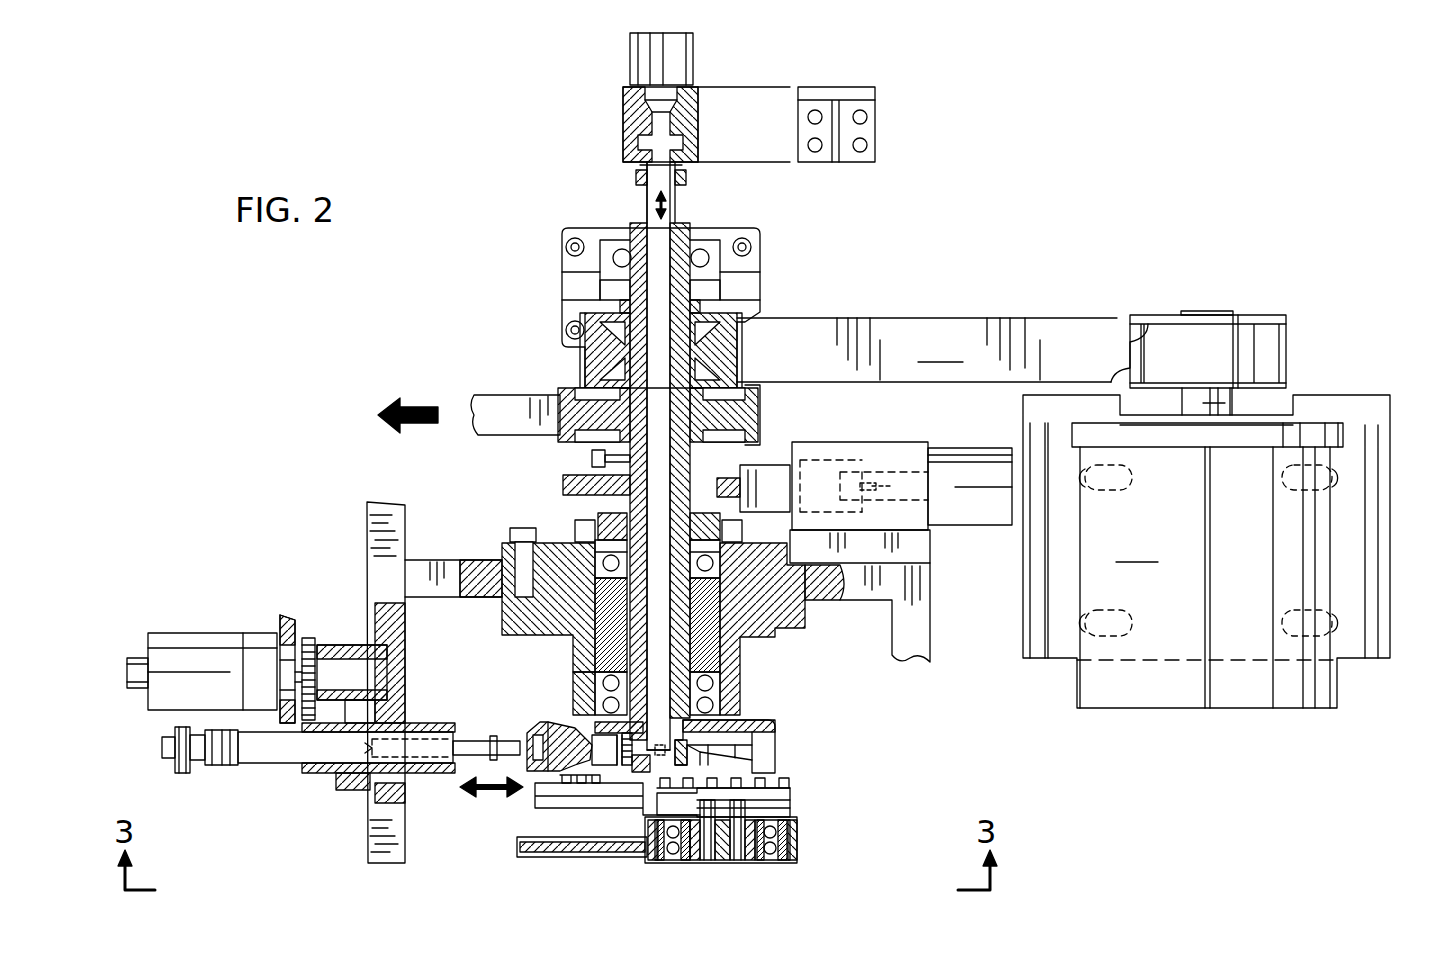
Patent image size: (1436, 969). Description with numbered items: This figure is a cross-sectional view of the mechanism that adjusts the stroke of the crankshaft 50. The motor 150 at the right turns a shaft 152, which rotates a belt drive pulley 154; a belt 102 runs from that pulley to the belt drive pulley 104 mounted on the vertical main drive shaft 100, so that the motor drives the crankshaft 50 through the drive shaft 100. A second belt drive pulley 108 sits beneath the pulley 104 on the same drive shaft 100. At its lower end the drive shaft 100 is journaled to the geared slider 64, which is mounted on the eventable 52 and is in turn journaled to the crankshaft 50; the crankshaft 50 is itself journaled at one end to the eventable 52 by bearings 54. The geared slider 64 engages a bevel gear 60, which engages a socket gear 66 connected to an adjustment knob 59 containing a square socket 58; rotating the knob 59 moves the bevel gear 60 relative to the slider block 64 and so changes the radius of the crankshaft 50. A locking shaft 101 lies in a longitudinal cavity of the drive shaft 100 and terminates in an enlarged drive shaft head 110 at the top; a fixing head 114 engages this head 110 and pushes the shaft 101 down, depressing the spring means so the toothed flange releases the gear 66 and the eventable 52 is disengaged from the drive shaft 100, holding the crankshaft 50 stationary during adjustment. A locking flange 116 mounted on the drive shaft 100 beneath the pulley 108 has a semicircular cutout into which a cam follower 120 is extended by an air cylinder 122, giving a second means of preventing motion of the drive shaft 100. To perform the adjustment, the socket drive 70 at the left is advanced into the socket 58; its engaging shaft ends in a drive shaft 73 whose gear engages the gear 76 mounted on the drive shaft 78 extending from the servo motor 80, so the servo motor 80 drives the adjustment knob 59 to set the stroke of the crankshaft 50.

The crankshaft 50 is at (560, 842).
The eventable 52 is at (722, 860).
The bearings 54 is at (780, 860).
The square socket 58 is at (530, 725).
The adjustment knob 59 is at (560, 772).
The bevel gear 60 is at (722, 770).
The geared slider 64 is at (775, 797).
The socket gear 66 is at (627, 742).
The socket drive 70 is at (507, 738).
The drive shaft 73 is at (272, 745).
The gear 76 is at (310, 640).
The drive shaft 78 is at (290, 655).
The servo motor 80 is at (192, 637).
The drive shaft 100 is at (640, 214).
The locking shaft 101 is at (636, 179).
The belt 102 is at (942, 350).
The belt drive pulley 104 is at (735, 316).
The belt drive pulley 108 is at (762, 415).
The drive shaft head 110 is at (688, 178).
The fixing head 114 is at (875, 122).
The locking flange 116 is at (563, 487).
The cam follower 120 is at (762, 483).
The air cylinder 122 is at (973, 510).
The motor 150 is at (1206, 551).
The shaft 152 is at (1216, 404).
The belt drive pulley 154 is at (1302, 317).